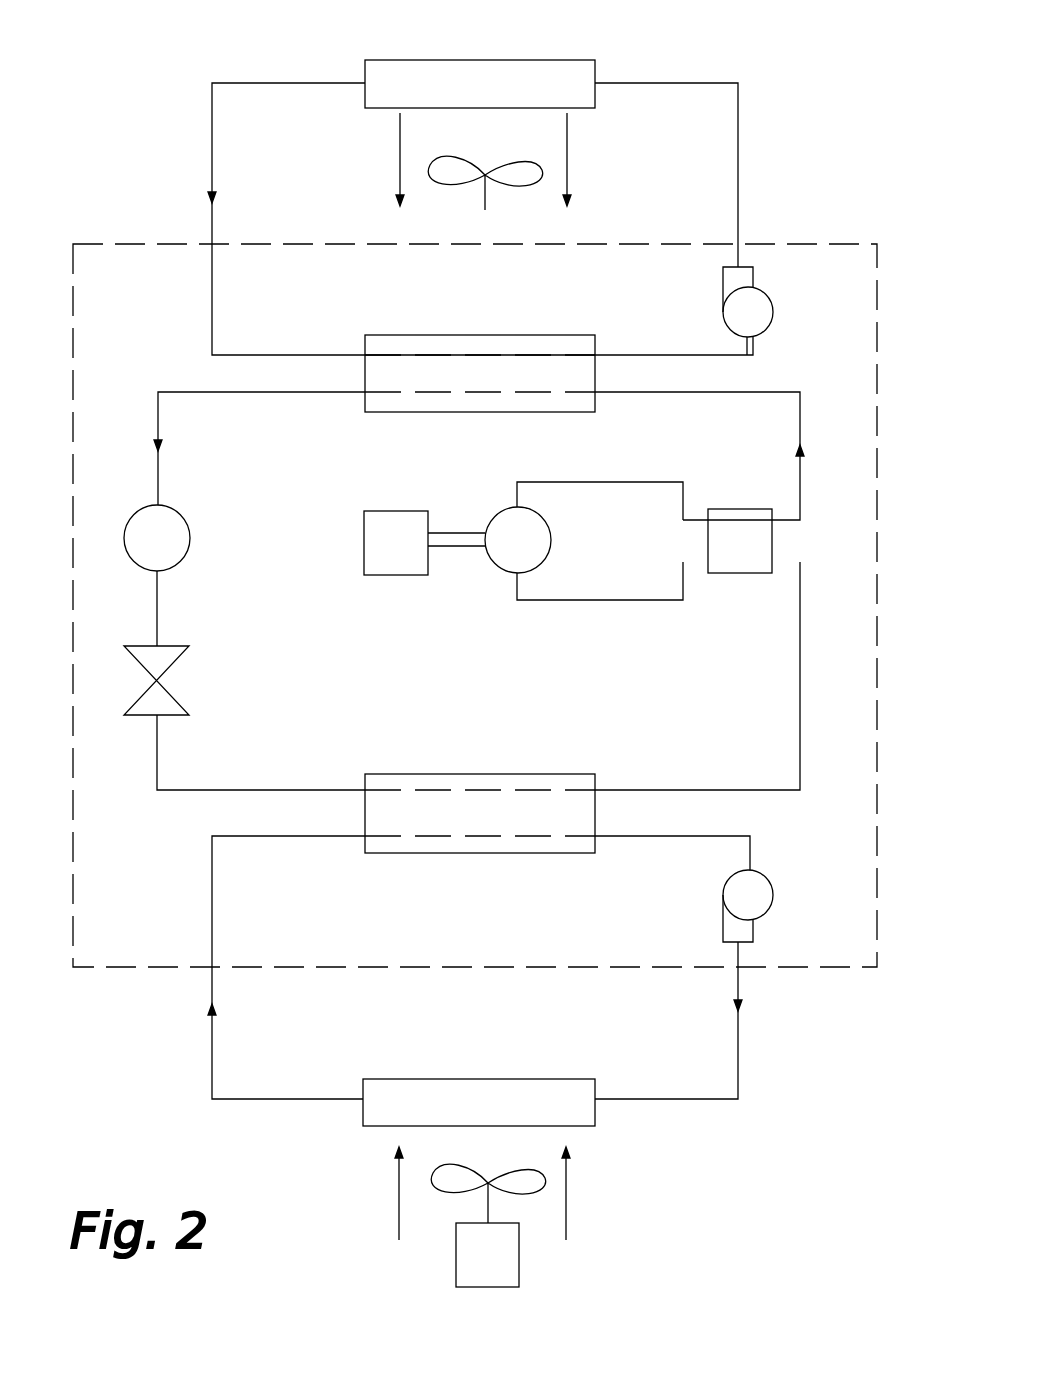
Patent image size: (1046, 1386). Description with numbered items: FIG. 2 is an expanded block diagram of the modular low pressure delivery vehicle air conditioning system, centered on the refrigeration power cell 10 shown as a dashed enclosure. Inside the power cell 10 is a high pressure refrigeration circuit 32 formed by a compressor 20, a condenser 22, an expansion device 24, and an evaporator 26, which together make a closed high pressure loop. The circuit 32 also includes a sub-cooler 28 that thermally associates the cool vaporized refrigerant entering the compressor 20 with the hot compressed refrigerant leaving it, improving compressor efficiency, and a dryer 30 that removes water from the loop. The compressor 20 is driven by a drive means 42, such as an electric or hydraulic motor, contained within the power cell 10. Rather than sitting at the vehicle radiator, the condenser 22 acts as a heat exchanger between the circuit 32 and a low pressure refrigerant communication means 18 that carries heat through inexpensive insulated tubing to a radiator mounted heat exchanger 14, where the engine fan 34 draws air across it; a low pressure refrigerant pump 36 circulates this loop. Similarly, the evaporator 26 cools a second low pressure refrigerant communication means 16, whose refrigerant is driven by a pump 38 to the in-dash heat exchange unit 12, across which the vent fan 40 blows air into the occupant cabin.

The refrigeration power cell 10 is at (157, 243).
The in-dash heat exchange unit 12 is at (580, 1080).
The radiator mounted heat exchanger 14 is at (595, 71).
The low pressure refrigerant communication means 16 is at (798, 1042).
The low pressure refrigerant communication means 18 is at (795, 160).
The compressor 20 is at (500, 510).
The condenser 22 is at (385, 412).
The expansion device 24 is at (178, 645).
The evaporator 26 is at (575, 774).
The sub-cooler 28 is at (740, 509).
The dryer 30 is at (178, 508).
The high pressure refrigeration circuit 32 is at (141, 375).
The engine fan 34 is at (523, 190).
The low pressure refrigerant pump 36 is at (770, 325).
The in-dash loop pump 38 is at (723, 895).
The vent fan 40 is at (519, 1268).
The drive means 42 is at (398, 575).